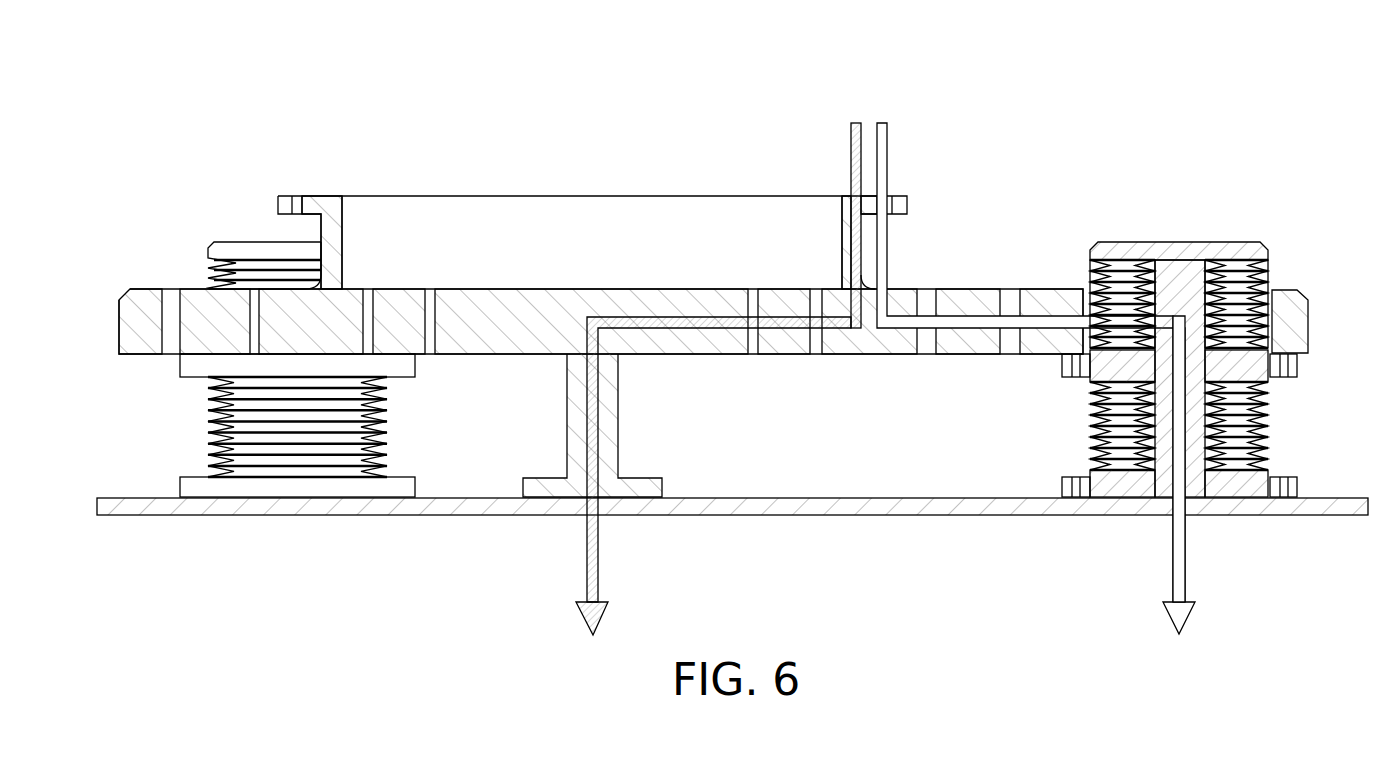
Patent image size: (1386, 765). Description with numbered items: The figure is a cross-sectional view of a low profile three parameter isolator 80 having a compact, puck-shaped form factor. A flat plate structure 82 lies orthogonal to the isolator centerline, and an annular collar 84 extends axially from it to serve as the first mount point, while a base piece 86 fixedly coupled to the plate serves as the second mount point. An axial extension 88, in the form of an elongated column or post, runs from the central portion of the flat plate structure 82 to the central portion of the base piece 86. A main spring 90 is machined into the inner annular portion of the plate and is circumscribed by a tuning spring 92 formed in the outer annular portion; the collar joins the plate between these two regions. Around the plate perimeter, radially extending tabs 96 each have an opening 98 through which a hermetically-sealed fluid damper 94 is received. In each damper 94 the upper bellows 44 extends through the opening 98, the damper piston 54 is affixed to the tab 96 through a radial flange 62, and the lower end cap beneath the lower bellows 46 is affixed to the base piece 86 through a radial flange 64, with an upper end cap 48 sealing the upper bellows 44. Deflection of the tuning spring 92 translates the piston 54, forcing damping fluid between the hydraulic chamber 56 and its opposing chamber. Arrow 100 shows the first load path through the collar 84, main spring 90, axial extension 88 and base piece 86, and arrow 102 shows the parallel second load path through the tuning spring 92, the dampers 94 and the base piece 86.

The low profile three parameter isolator 80 is at (250, 141).
The flat plate structure 82 is at (1223, 352).
The annular collar 84 is at (698, 215).
The base piece 86 is at (880, 517).
The axial extension 88 is at (610, 420).
The main spring 90 is at (405, 300).
The tuning spring 92 is at (975, 295).
The fluid damper 94 is at (200, 262).
The tab 96 is at (1317, 353).
The opening 98 is at (1090, 295).
The arrow representing first load path 100 is at (851, 170).
The arrow representing second load path 102 is at (887, 170).
The upper bellows 44 is at (205, 282).
The lower bellows 46 is at (208, 432).
The upper end cap 48 is at (240, 256).
The damper piston 54 is at (1258, 370).
The hydraulic chamber 56 is at (1225, 428).
The radial flange 62 is at (415, 360).
The radial flange 64 is at (418, 488).